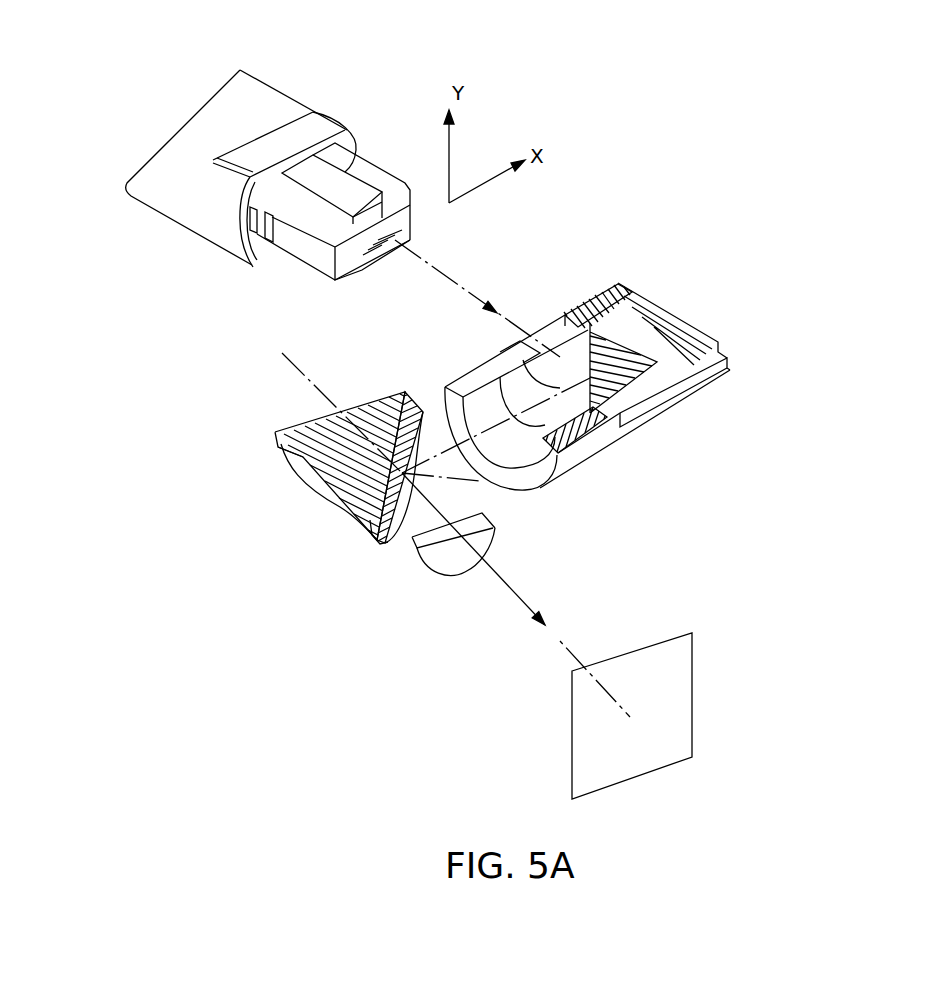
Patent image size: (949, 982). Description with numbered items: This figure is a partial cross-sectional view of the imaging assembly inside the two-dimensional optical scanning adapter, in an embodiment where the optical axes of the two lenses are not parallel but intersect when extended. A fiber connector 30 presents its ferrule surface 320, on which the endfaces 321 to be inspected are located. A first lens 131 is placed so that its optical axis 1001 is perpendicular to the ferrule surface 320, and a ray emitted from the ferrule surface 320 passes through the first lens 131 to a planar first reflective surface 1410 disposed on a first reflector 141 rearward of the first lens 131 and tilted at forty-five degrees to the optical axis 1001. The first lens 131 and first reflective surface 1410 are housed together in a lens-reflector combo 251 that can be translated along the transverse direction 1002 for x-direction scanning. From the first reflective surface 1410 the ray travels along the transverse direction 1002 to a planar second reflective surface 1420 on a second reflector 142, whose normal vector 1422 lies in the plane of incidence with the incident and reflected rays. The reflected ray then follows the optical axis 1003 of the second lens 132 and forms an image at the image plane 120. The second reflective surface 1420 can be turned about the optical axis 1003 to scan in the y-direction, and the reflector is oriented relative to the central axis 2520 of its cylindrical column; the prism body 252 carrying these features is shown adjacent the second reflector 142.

The fiber connector 30 is at (147, 228).
The ferrule surface 320 is at (400, 226).
The endfaces 321 is at (362, 268).
The optical axis of the first lens 1001 is at (460, 287).
The transverse direction 1002 is at (565, 500).
The optical axis of the second lens 1003 is at (508, 593).
The central axis 2520 is at (290, 360).
The prism 252 is at (322, 473).
The second reflector 142 is at (400, 473).
The second reflective surface 1420 is at (403, 520).
The second lens 132 is at (442, 557).
The image plane 120 is at (663, 723).
The first reflector 141 is at (612, 345).
The first lens 131 is at (584, 387).
The first reflective surface 1410 is at (600, 421).
The normal vector 1422 is at (467, 482).
The lens-reflector combo 251 is at (703, 388).